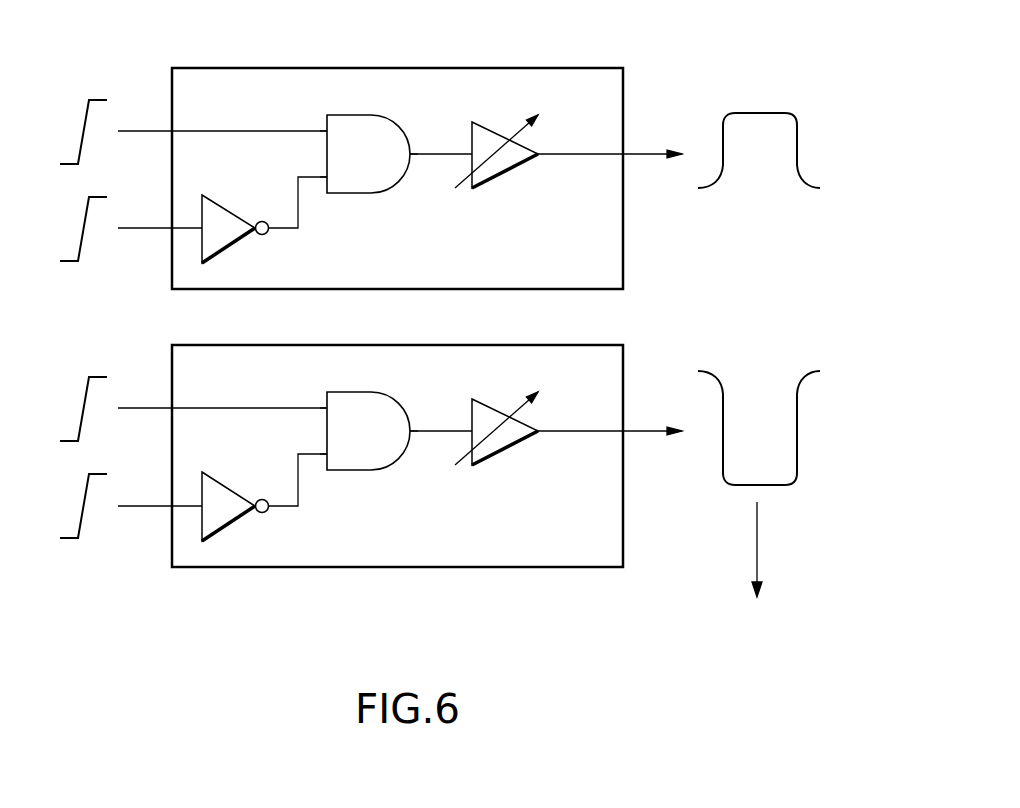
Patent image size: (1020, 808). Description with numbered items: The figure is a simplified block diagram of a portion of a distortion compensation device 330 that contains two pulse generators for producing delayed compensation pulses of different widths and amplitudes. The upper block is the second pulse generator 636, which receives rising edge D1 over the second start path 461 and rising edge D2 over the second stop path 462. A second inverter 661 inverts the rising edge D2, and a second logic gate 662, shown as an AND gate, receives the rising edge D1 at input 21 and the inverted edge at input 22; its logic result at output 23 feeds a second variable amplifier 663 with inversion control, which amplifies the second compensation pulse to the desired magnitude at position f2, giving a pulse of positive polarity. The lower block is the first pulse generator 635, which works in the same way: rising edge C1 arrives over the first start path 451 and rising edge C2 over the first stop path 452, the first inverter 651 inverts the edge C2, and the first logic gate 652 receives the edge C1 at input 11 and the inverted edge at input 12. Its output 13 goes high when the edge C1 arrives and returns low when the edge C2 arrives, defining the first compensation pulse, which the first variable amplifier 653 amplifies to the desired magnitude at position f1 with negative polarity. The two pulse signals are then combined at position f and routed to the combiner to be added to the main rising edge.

The distortion compensation device 330 is at (431, 33).
The second pulse generator 636 is at (519, 267).
The first pulse generator 635 is at (519, 544).
The second inverter 661 is at (230, 247).
The second logic gate 662 is at (385, 193).
The second variable amplifier 663 is at (517, 167).
The first inverter 651 is at (230, 524).
The first logic gate 652 is at (385, 470).
The first variable amplifier 653 is at (517, 444).
The second start path 461 is at (138, 128).
The second stop path 462 is at (138, 225).
The first start path 451 is at (138, 405).
The first stop path 452 is at (138, 503).
The input 21 is at (335, 136).
The input 22 is at (335, 178).
The output 23 is at (400, 156).
The input 11 is at (335, 413).
The input 12 is at (335, 455).
The output 13 is at (400, 433).